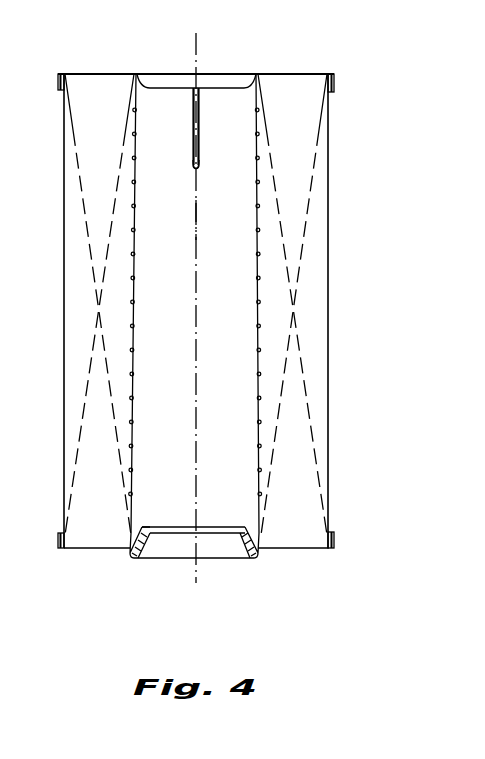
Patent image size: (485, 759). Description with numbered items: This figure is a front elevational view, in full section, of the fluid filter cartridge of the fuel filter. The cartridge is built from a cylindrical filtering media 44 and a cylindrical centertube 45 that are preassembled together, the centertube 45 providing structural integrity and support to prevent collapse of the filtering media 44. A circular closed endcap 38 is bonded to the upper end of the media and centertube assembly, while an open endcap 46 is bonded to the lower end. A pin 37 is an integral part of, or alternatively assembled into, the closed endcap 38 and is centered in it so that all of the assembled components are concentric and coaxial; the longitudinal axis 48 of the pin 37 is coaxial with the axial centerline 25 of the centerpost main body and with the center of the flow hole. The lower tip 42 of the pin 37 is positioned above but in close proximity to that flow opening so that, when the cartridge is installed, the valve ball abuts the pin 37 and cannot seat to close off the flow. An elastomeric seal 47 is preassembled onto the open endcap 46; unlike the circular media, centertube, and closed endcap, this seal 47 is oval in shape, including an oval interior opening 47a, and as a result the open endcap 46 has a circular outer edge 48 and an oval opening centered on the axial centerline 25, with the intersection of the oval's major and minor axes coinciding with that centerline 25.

The axial centerline 25 is at (197, 50).
The pin 37 is at (199, 132).
The closed endcap 38 is at (302, 74).
The lower tip 42 is at (195, 172).
The filtering media 44 is at (310, 255).
The centertube 45 is at (133, 360).
The open endcap 46 is at (132, 538).
The elastomeric seal 47 is at (253, 560).
The oval interior opening 47a is at (178, 545).
The longitudinal axis 48 is at (197, 223).